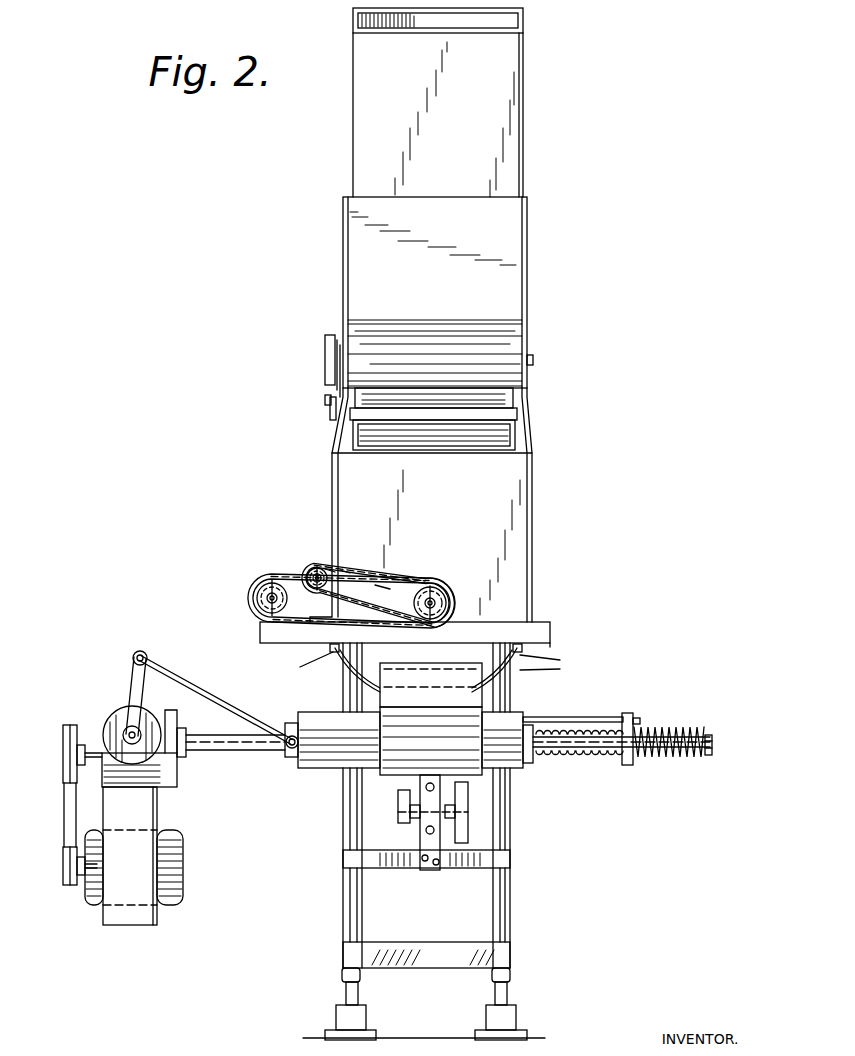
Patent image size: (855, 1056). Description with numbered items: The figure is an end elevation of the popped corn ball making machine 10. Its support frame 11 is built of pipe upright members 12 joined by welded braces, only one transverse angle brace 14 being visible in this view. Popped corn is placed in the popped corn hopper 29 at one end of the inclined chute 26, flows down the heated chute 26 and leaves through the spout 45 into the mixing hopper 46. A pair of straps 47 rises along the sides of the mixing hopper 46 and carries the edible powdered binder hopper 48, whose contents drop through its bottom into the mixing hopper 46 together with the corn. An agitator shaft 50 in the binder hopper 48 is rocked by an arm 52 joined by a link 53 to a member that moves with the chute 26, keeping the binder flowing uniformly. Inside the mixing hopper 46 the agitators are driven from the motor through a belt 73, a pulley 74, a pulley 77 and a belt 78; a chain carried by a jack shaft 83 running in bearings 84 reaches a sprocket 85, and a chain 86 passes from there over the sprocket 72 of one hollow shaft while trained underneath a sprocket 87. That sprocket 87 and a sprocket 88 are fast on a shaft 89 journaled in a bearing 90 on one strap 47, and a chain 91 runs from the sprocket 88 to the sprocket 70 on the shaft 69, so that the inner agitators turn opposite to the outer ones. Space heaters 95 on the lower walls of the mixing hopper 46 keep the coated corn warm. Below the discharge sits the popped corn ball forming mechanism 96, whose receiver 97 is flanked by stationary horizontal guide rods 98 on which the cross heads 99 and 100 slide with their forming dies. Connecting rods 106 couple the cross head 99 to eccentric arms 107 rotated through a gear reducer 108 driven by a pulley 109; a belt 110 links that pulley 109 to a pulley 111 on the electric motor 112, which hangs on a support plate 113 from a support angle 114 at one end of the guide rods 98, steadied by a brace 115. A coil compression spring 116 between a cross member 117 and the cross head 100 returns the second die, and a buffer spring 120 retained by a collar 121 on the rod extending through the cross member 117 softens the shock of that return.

The popped corn ball making machine 10 is at (662, 200).
The support frame 11 is at (585, 837).
The upright members 12 is at (343, 910).
The transverse angle braces 14 is at (420, 950).
The inclined chute 26 is at (520, 397).
The popped corn hopper 29 is at (515, 108).
The spout 45 is at (515, 415).
The mixing hopper 46 is at (518, 532).
The straps 47 is at (333, 456).
The edible powdered binder hopper 48 is at (358, 262).
The shaft 50 is at (534, 360).
The arm 52 is at (330, 384).
The link 53 is at (329, 412).
The shaft 69 is at (455, 606).
The sprocket 70 is at (433, 588).
The sprocket 72 is at (440, 632).
The belt 73 is at (400, 794).
The pulley 74 is at (398, 813).
The pulley 77 is at (470, 820).
The belt 78 is at (459, 846).
The jack shaft 83 is at (272, 592).
The bearings 84 is at (257, 598).
The sprocket 85 is at (250, 590).
The chain 86 is at (362, 581).
The sprocket 87 is at (355, 575).
The sprocket 88 is at (317, 566).
The shaft 89 is at (312, 568).
The bearing 90 is at (333, 576).
The chain 91 is at (386, 590).
The space heaters 95 is at (472, 688).
The popped corn ball forming mechanism 96 is at (693, 686).
The receiver 97 is at (475, 768).
The guide rods 98 is at (233, 751).
The cross head 99 is at (287, 754).
The cross head 100 is at (533, 760).
The connecting rods 106 is at (147, 653).
The eccentric arms 107 is at (130, 665).
The gear reducer 108 is at (119, 710).
The pulley 109 is at (64, 727).
The belt 110 is at (64, 797).
The pulley 111 is at (63, 858).
The electric motor 112 is at (178, 841).
The support plate 113 is at (125, 922).
The support angle 114 is at (170, 784).
The brace 115 is at (214, 676).
The coil compression spring 116 is at (598, 756).
The cross member 117 is at (634, 762).
The buffer spring 120 is at (672, 730).
The collar 121 is at (709, 735).